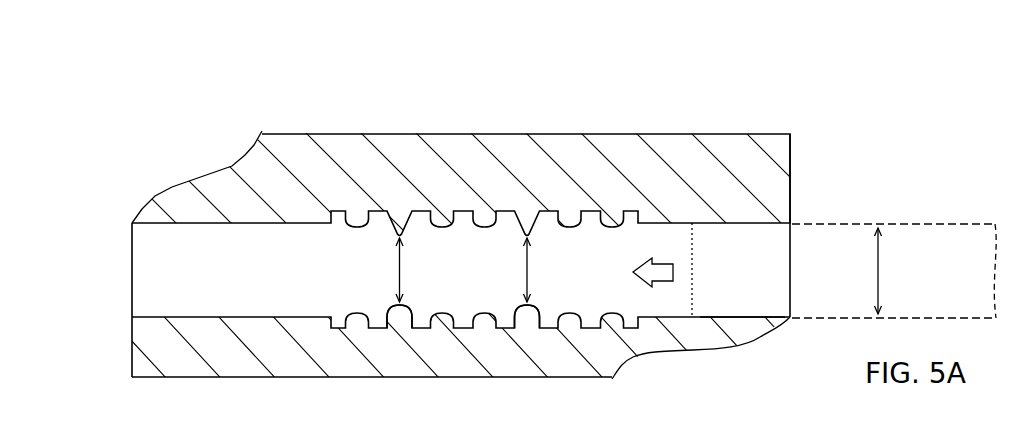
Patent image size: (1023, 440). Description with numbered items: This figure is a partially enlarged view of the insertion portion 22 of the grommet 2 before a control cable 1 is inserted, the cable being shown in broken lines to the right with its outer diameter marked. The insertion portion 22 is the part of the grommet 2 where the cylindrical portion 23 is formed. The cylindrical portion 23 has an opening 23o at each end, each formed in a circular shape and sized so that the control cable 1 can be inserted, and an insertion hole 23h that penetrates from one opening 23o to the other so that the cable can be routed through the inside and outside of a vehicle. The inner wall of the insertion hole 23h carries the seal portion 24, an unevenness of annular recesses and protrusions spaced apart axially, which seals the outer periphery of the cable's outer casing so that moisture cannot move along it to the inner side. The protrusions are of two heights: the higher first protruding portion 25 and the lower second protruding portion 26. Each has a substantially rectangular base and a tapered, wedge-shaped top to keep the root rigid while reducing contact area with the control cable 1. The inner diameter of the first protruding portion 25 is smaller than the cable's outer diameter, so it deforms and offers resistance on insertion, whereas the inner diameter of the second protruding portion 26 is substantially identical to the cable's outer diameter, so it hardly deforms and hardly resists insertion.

The control cable 1 is at (933, 202).
The grommet 2 is at (808, 112).
The insertion portion 22 is at (402, 105).
The cylindrical portion 23 is at (560, 134).
The opening 23o is at (807, 240).
The insertion hole 23h is at (738, 318).
The seal portion 24 is at (312, 290).
The first protruding portion 25 is at (415, 311).
The second protruding portion 26 is at (540, 311).